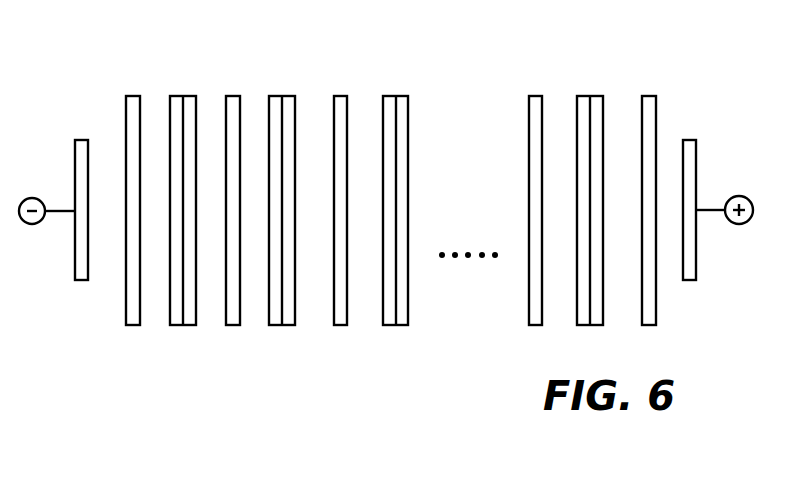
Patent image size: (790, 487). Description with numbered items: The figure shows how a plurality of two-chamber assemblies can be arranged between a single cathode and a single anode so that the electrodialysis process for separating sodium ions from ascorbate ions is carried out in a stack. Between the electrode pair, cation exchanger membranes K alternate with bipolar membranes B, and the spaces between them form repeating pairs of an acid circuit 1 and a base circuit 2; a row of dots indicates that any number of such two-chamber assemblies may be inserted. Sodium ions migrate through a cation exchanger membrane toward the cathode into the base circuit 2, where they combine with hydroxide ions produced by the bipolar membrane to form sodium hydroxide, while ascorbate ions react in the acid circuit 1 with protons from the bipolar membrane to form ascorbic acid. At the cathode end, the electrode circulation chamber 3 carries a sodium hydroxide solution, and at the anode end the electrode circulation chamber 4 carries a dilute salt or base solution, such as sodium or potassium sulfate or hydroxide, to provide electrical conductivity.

The acid circuit 1 is at (392, 197).
The base circuit 2 is at (399, 197).
The cathode electrode chamber 3 is at (64, 210).
The anode electrode chamber 4 is at (708, 210).